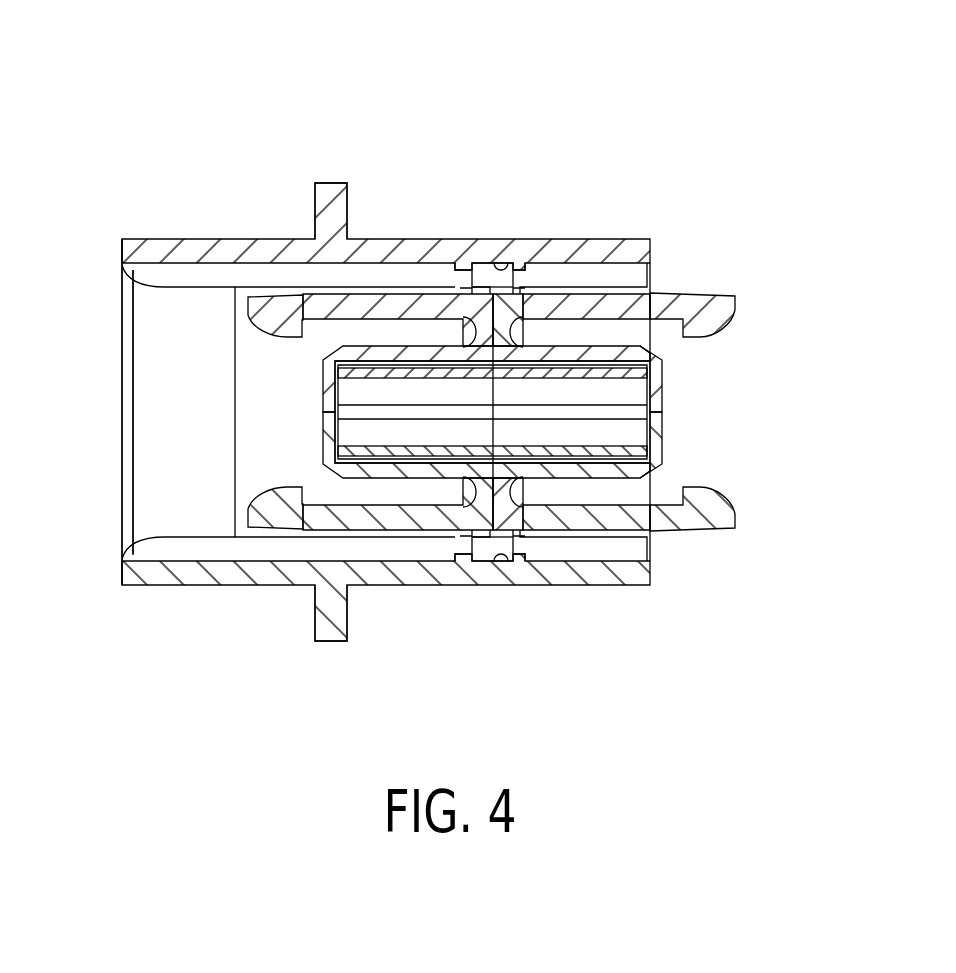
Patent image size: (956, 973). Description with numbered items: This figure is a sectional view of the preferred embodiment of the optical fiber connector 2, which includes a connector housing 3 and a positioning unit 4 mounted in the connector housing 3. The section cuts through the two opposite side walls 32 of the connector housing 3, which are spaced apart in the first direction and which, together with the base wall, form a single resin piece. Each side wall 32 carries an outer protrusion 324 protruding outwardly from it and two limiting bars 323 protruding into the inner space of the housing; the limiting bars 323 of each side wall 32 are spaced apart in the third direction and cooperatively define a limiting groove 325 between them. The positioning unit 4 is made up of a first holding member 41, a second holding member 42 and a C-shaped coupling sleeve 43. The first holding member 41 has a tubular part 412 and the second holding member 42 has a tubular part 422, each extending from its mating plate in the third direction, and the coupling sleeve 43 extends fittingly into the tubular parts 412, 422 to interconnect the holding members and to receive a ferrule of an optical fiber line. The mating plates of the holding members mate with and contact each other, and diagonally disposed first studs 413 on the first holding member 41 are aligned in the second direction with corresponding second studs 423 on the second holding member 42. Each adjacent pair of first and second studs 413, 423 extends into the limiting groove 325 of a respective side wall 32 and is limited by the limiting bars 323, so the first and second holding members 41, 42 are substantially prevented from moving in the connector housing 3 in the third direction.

The optical fiber connector 2 is at (150, 162).
The connector housing 3 is at (185, 644).
The side wall 32 is at (232, 237).
The limiting bar 323 is at (456, 268).
The outer protrusion 324 is at (333, 191).
The limiting groove 325 is at (512, 262).
The positioning unit 4 is at (312, 418).
The first holding member 41 is at (713, 290).
The tubular part 412 is at (664, 410).
The first stud 413 is at (515, 281).
The second holding member 42 is at (377, 292).
The tubular part 422 is at (405, 472).
The second stud 423 is at (523, 545).
The coupling sleeve 43 is at (597, 368).